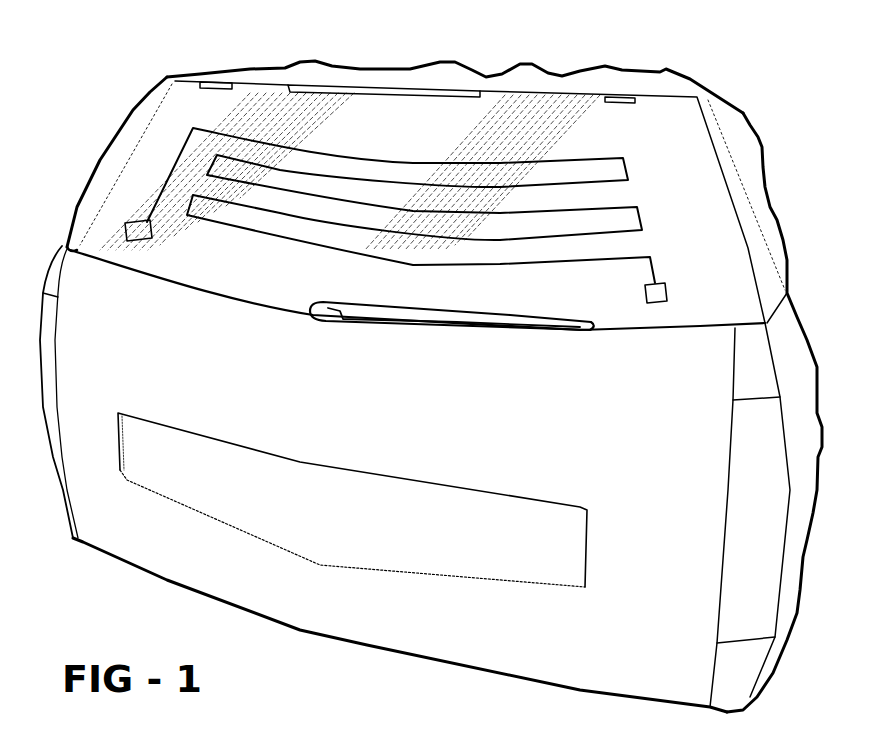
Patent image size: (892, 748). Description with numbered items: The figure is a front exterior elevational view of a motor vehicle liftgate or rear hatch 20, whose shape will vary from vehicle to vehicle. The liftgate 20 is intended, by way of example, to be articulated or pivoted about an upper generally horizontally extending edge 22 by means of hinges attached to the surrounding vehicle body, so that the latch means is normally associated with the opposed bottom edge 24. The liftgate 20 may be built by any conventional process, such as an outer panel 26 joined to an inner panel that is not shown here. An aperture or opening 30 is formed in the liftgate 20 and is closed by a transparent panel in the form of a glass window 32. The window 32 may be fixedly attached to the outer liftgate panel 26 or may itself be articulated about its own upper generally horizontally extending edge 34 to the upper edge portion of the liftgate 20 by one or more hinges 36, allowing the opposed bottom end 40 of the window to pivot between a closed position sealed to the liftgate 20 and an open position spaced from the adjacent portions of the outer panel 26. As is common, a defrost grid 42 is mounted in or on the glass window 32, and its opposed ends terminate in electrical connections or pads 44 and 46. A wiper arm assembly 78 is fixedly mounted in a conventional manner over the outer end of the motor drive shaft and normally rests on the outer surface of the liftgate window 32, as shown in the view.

The liftgate 20 is at (772, 212).
The upper edge 22 is at (690, 87).
The bottom edge 24 is at (370, 645).
The outer panel 26 is at (795, 373).
The aperture 30 is at (707, 233).
The glass window 32 is at (673, 163).
The upper edge of window 34 is at (377, 87).
The hinges 36 is at (218, 88).
The bottom end of window 40 is at (230, 290).
The defrost grid 42 is at (165, 182).
The electrical connection pad 44 is at (127, 227).
The electrical connection pad 46 is at (652, 297).
The wiper arm assembly 78 is at (413, 315).